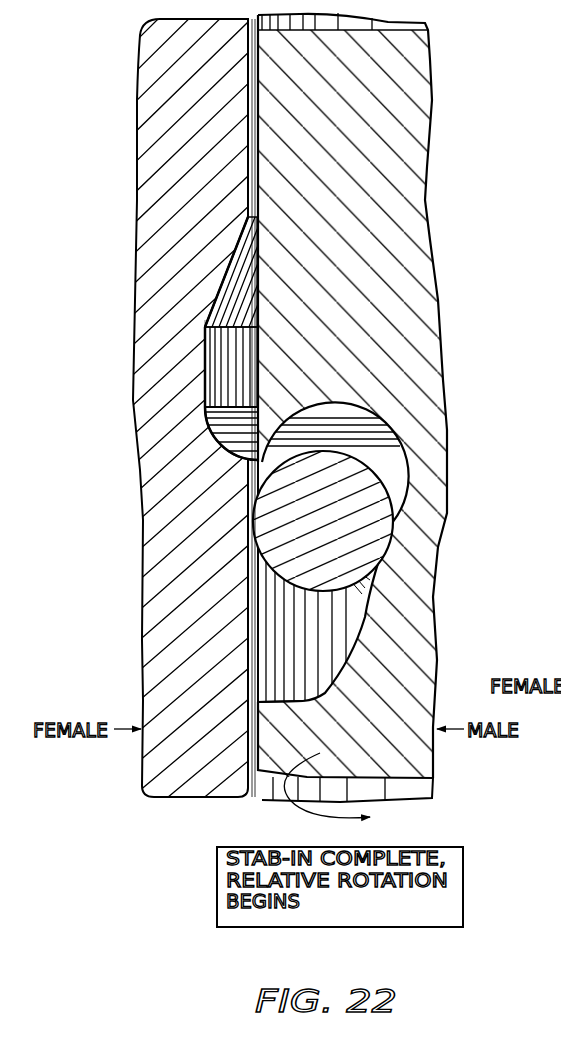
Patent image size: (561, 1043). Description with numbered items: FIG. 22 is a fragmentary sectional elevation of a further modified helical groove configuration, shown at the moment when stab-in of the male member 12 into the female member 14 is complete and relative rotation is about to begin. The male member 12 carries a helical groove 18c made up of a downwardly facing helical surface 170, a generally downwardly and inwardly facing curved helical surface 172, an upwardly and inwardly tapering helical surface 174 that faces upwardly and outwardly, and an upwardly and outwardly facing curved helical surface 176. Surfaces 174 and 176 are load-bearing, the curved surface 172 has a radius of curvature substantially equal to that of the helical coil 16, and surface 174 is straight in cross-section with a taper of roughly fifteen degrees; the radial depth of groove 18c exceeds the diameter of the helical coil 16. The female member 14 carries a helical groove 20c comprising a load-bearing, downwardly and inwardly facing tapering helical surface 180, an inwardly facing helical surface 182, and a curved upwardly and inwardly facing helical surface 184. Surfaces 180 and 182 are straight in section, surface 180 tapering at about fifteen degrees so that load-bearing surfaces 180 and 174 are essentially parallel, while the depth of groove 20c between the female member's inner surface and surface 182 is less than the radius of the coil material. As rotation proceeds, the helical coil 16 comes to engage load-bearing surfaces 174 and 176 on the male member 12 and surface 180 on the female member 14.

The male member 12 is at (431, 218).
The female member 14 is at (138, 163).
The helical coil 16 is at (391, 490).
The helical groove 18c is at (405, 451).
The helical groove 20c is at (203, 391).
The downwardly facing helical surface 170 is at (256, 473).
The curved helical surface 172 is at (340, 408).
The tapering helical surface 174 is at (352, 612).
The curved helical surface 176 is at (303, 698).
The tapering helical surface 180 is at (230, 290).
The inwardly facing helical surface 182 is at (216, 371).
The curved helical surface 184 is at (214, 416).